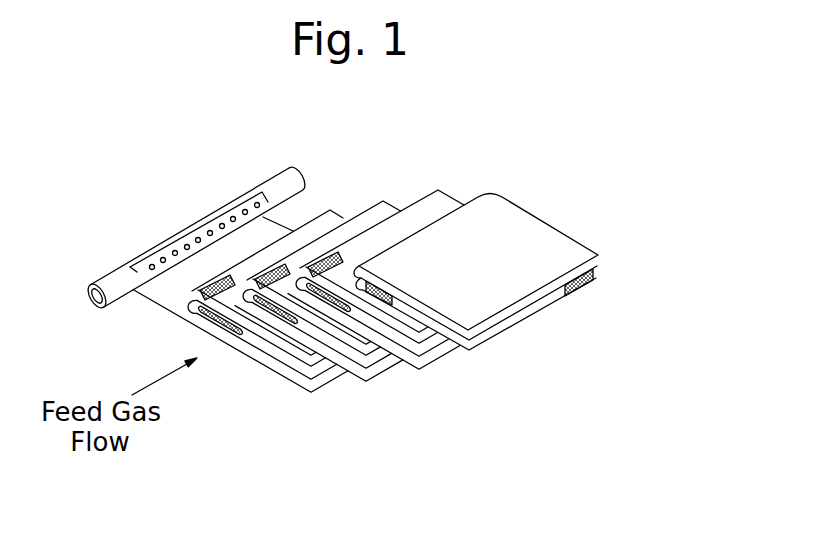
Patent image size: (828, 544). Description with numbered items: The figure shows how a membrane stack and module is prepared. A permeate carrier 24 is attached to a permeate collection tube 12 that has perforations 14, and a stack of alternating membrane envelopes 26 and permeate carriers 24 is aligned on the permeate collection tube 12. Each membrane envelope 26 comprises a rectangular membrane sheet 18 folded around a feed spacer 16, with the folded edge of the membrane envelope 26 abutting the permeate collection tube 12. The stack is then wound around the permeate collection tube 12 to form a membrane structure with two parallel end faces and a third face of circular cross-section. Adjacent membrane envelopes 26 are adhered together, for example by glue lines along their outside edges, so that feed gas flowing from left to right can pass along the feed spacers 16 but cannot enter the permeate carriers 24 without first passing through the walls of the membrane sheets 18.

The permeate collection tube 12 is at (293, 183).
The perforations 14 is at (233, 217).
The feed spacer 16 is at (535, 295).
The membrane sheet 18 is at (510, 227).
The permeate carrier 24 is at (173, 296).
The membrane envelope 26 is at (562, 224).